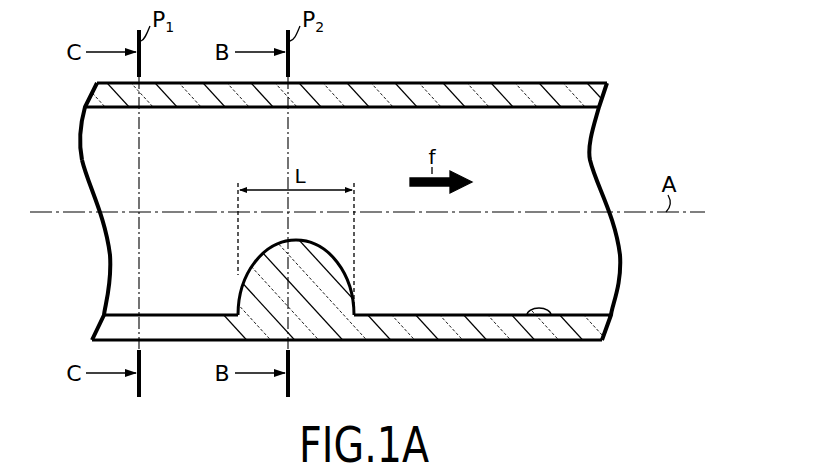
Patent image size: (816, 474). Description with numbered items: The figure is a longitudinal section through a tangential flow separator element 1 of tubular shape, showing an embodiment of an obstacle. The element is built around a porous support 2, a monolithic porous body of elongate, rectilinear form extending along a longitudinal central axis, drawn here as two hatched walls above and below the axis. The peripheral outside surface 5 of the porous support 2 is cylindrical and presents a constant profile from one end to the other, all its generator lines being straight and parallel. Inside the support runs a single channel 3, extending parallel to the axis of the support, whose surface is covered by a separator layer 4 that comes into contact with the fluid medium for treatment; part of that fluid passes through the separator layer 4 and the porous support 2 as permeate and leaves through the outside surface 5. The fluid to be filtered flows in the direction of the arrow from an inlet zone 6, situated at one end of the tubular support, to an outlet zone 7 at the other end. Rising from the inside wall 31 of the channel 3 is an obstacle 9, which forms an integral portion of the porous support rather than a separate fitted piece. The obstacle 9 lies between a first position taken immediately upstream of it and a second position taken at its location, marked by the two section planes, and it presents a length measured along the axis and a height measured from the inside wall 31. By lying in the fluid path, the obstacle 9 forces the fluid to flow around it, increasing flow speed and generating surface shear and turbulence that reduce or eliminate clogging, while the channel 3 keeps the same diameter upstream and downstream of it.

The tangential flow separator element 1 is at (466, 45).
The porous support 2 is at (487, 331).
The channel 3 is at (94, 126).
The separator layer 4 is at (200, 312).
The outside surface 5 is at (360, 83).
The inlet zone 6 is at (97, 303).
The outlet zone 7 is at (620, 303).
The obstacle 9 is at (312, 260).
The inside wall of the channel 31 is at (546, 318).